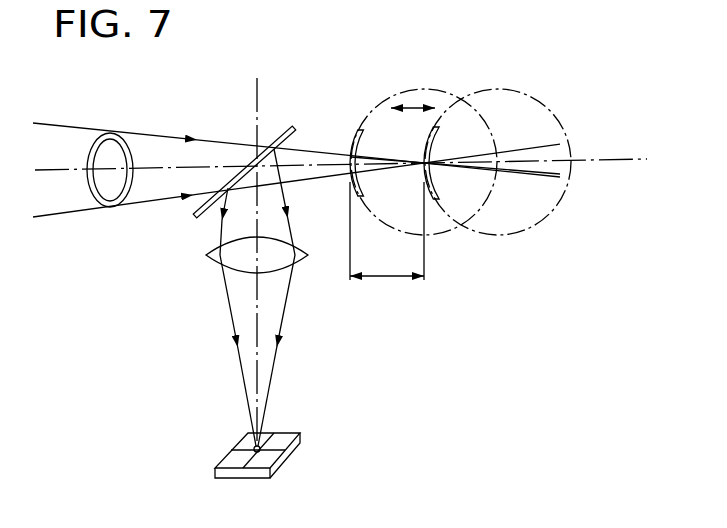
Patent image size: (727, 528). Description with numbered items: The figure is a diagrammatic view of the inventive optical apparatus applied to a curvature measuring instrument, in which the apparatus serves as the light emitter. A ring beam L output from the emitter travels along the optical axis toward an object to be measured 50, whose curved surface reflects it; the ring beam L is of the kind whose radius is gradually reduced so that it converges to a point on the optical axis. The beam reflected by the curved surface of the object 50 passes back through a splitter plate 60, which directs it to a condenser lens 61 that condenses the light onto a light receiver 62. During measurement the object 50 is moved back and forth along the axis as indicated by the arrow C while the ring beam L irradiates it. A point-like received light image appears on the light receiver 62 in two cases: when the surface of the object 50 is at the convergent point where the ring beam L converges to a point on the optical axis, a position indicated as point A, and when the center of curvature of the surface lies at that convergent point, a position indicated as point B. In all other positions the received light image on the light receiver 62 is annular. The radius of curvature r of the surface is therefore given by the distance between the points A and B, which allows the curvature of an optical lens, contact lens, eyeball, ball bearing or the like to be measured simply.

The ring beam L is at (100, 134).
The splitter plate 60 is at (280, 127).
The object to be measured 50 is at (351, 132).
The arrow C is at (418, 102).
The point B is at (351, 251).
The point A is at (423, 251).
The radius of curvature r is at (387, 258).
The condenser lens 61 is at (213, 264).
The light receiver 62 is at (277, 433).